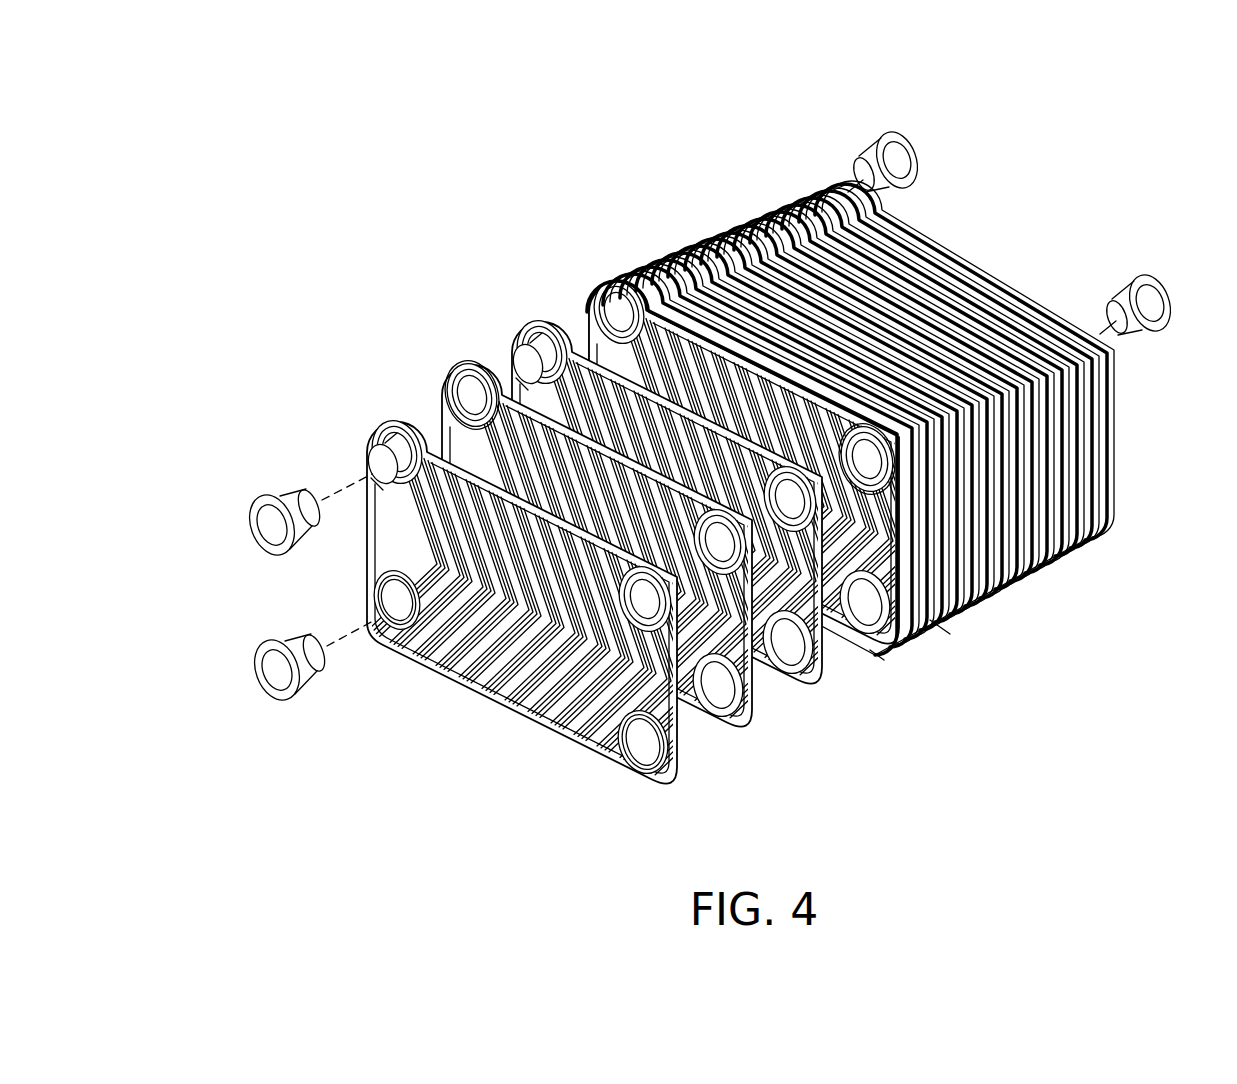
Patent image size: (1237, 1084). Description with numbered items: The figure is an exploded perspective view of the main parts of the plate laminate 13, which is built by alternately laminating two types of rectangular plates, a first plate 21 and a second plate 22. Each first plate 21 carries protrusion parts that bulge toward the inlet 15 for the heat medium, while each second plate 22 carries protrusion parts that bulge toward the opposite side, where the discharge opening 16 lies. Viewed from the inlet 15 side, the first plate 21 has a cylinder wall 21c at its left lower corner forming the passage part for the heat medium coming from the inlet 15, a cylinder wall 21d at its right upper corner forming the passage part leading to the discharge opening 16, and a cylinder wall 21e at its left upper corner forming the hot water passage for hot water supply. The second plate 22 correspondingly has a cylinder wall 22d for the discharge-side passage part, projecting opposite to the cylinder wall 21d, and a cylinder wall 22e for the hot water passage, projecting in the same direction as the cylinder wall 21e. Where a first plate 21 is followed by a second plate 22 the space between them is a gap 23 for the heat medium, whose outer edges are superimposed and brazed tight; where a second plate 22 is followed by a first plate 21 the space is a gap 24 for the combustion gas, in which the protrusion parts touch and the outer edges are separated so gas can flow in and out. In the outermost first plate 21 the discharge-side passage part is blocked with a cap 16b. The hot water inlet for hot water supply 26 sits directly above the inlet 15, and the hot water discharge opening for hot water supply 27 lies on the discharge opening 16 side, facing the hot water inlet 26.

The plate laminate 13 is at (652, 189).
The inlet 15 is at (290, 704).
The discharge opening 16 is at (1170, 337).
The cap 16b is at (648, 608).
The first plate 21 is at (610, 430).
The cylinder wall 21c is at (400, 640).
The cylinder wall 21d is at (940, 628).
The cylinder wall 21e is at (565, 305).
The second plate 22 is at (825, 165).
The cylinder wall 22d is at (1010, 588).
The cylinder wall 22e is at (445, 388).
The gap for a heat medium 23 is at (707, 755).
The gap for a gas 24 is at (775, 720).
The hot water inlet for hot water supply 26 is at (250, 497).
The hot water discharge opening for hot water supply 27 is at (920, 132).